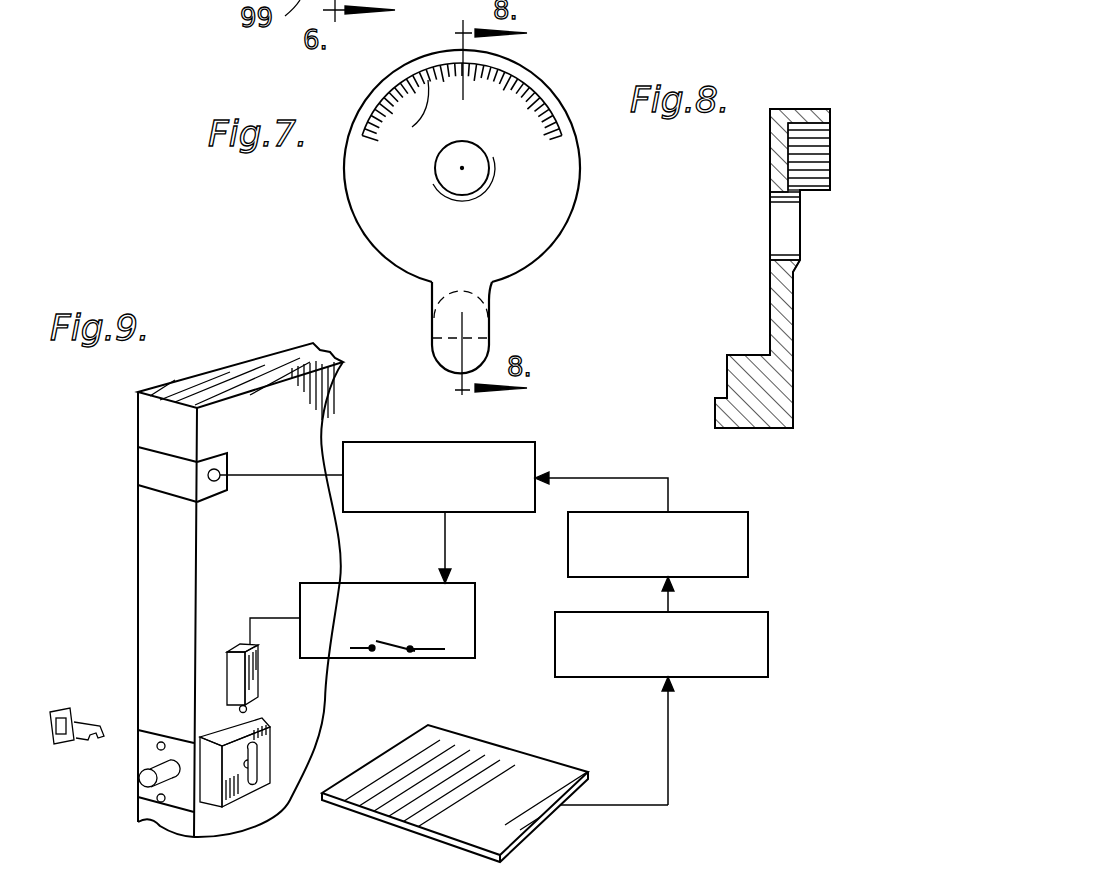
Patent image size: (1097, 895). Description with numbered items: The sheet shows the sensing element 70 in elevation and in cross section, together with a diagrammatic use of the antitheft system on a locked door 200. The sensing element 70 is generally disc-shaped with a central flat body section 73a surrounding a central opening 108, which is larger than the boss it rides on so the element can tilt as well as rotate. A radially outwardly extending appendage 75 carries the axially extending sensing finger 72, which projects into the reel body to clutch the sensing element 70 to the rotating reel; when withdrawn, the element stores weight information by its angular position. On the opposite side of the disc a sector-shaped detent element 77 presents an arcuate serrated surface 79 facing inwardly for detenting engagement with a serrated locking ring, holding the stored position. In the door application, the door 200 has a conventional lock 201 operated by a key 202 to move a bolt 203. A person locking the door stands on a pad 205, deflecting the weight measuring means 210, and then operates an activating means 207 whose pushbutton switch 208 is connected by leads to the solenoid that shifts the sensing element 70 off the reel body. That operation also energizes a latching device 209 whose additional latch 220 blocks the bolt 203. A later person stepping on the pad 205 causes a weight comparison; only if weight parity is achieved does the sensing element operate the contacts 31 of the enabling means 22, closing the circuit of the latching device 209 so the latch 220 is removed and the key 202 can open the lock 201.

In FIG. 7, the sensing element 70 is at (332, 186).
In FIG. 8, the sensing element 70 is at (815, 287).
In FIG. 7, the sensing finger 72 is at (516, 313).
In FIG. 8, the sensing finger 72 is at (706, 345).
In FIG. 7, the central flat body section 73a is at (500, 250).
In FIG. 8, the central flat body section 73a is at (815, 261).
In FIG. 7, the appendage 75 is at (430, 298).
In FIG. 8, the appendage 75 is at (790, 325).
In FIG. 7, the detent element 77 is at (538, 78).
In FIG. 8, the detent element 77 is at (815, 108).
In FIG. 7, the arcuate serrated surface 79 is at (414, 119).
In FIG. 8, the arcuate serrated surface 79 is at (818, 160).
In FIG. 7, the central opening 108 is at (484, 175).
In FIG. 9, the door 200 is at (270, 357).
In FIG. 9, the lock 201 is at (145, 742).
In FIG. 9, the key 202 is at (60, 708).
In FIG. 9, the bolt 203 is at (140, 772).
In FIG. 9, the pad 205 is at (500, 798).
In FIG. 9, the activating means 207 is at (220, 505).
In FIG. 9, the pushbutton switch 208 is at (220, 467).
In FIG. 9, the latching device 209 is at (225, 632).
In FIG. 9, the weight measuring means 210 is at (330, 532).
In FIG. 9, the latch 220 is at (247, 708).
In FIG. 9, the enabling means 22 is at (470, 574).
In FIG. 9, the contacts 31 is at (438, 675).